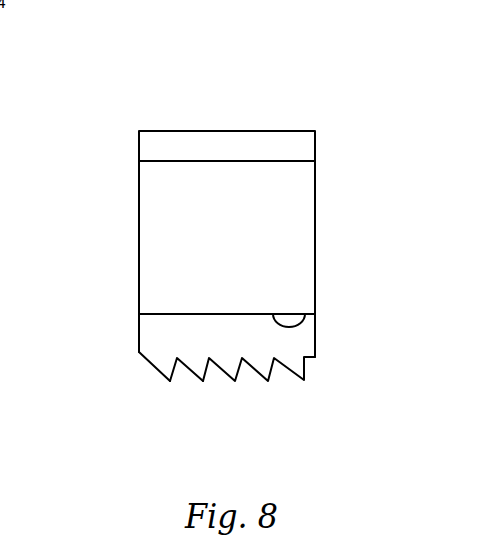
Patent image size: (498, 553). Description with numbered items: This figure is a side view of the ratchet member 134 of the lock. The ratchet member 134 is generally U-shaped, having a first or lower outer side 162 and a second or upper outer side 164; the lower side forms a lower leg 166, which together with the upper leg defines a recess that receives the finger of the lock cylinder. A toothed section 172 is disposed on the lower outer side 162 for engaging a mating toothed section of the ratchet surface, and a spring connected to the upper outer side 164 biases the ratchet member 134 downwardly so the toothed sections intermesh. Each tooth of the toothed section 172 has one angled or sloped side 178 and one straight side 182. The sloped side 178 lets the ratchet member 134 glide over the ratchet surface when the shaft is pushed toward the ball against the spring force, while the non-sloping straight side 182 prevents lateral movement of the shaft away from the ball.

The ratchet member 134 is at (108, 258).
The upper outer side 164 is at (247, 131).
The lower leg 166 is at (307, 332).
The lower outer side 162 is at (305, 316).
The angled side 178 is at (149, 361).
The toothed section 172 is at (250, 413).
The straight side 182 is at (186, 411).